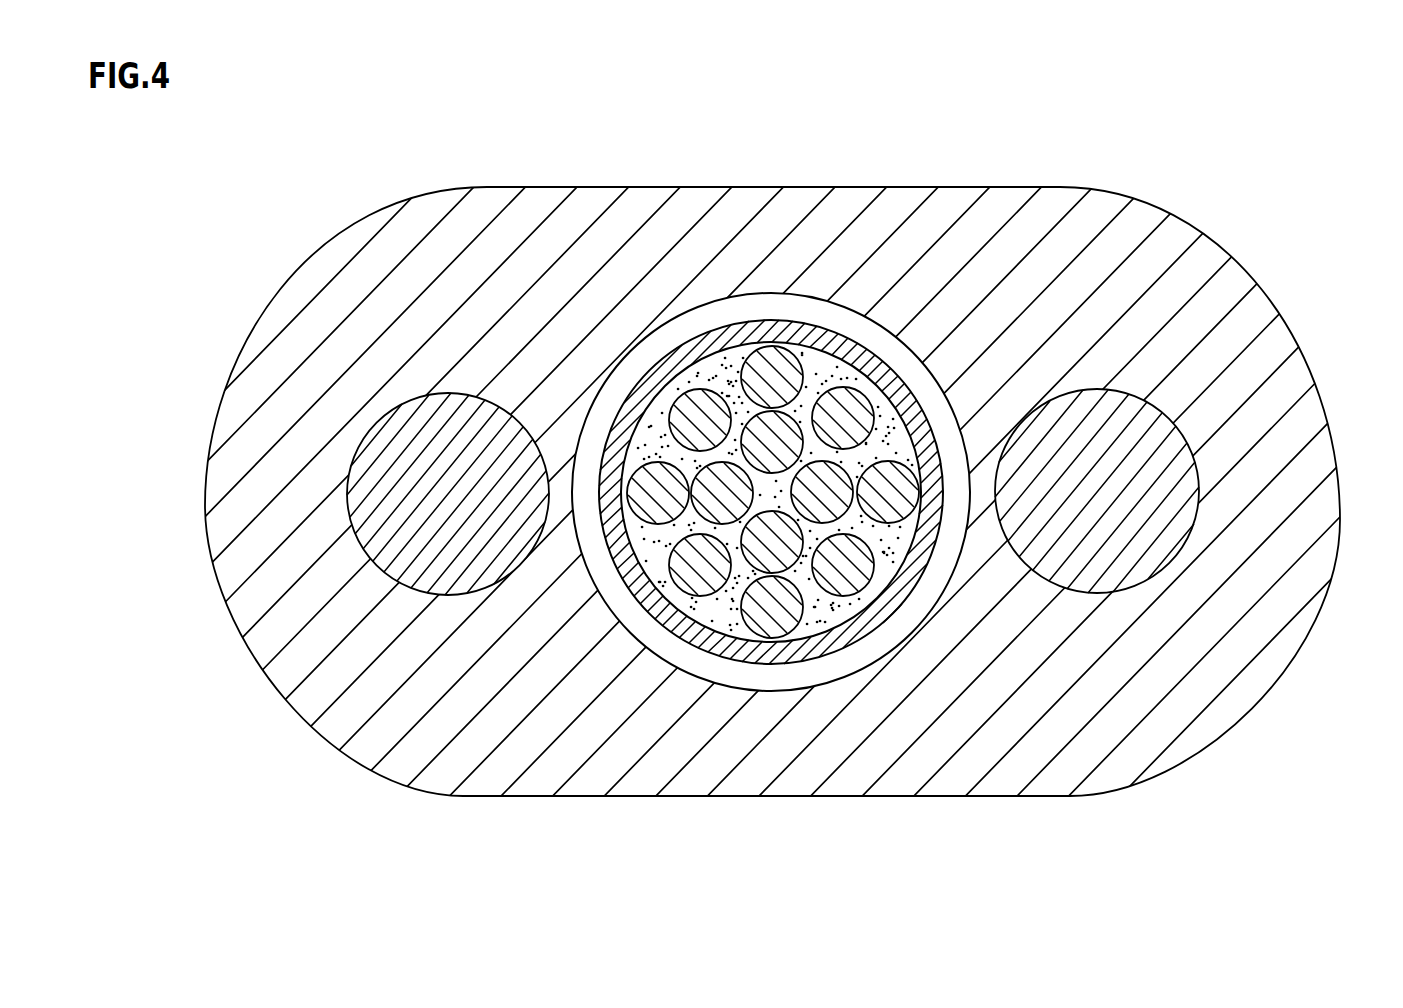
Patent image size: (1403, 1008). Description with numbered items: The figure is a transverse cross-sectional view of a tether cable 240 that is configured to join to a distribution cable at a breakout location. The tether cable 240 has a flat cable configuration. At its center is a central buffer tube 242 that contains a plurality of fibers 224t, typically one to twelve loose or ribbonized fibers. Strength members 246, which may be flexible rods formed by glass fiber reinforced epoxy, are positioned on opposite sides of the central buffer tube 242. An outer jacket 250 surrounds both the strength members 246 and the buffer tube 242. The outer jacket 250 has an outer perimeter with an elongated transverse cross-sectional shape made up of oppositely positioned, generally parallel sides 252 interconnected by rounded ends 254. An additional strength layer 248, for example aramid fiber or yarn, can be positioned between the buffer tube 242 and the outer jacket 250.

The tether cable 240 is at (1272, 202).
The central buffer tube 242 is at (787, 650).
The fibers 224t is at (853, 403).
The strength members 246 is at (1165, 443).
The additional strength layer 248 is at (785, 313).
The outer jacket 250 is at (1113, 720).
The sides 252 is at (653, 187).
The rounded ends 254 is at (1332, 573).